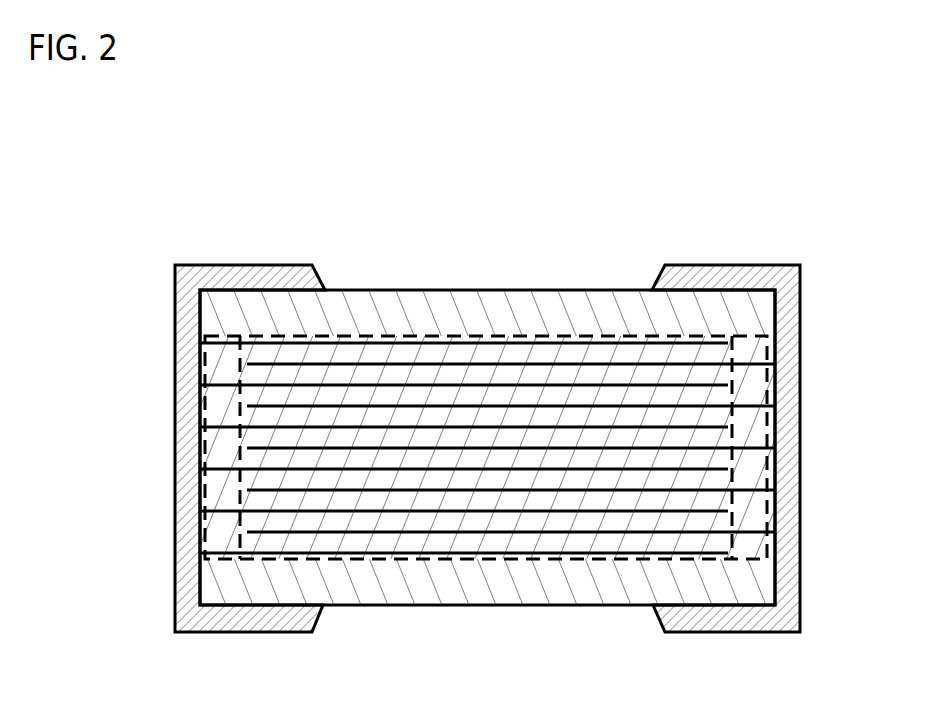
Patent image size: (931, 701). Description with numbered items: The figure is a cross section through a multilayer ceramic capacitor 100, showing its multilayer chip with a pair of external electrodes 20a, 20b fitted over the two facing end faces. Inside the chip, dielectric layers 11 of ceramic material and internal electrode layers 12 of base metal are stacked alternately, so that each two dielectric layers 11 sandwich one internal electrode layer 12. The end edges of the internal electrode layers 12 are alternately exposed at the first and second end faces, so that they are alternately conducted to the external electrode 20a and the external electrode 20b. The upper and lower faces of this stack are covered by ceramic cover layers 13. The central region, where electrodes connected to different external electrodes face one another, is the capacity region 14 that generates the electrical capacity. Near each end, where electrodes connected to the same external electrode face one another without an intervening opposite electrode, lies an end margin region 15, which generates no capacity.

The multilayer ceramic capacitor 100 is at (703, 212).
The dielectric layer 11 is at (600, 520).
The internal electrode layer 12 is at (477, 492).
The cover layer 13 is at (387, 307).
The capacity region 14 is at (510, 335).
The end margin region 15 is at (226, 336).
The external electrode 20a is at (198, 265).
The external electrode 20b is at (768, 265).